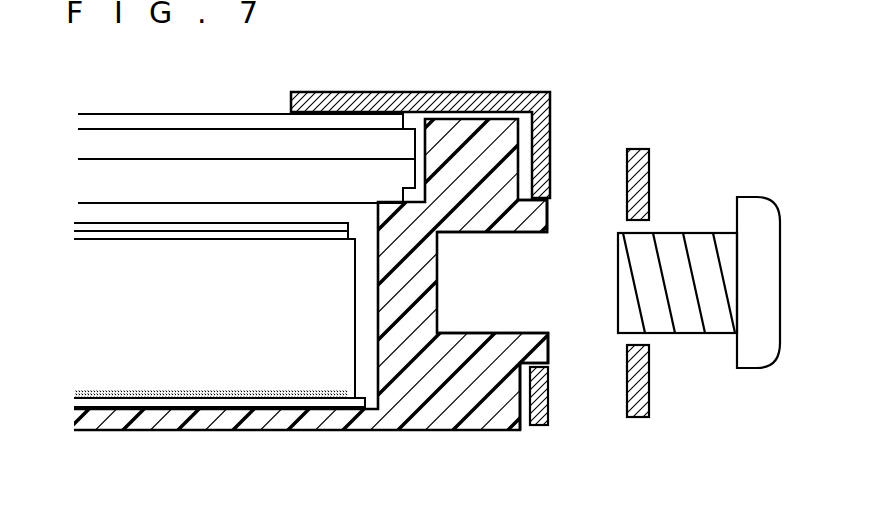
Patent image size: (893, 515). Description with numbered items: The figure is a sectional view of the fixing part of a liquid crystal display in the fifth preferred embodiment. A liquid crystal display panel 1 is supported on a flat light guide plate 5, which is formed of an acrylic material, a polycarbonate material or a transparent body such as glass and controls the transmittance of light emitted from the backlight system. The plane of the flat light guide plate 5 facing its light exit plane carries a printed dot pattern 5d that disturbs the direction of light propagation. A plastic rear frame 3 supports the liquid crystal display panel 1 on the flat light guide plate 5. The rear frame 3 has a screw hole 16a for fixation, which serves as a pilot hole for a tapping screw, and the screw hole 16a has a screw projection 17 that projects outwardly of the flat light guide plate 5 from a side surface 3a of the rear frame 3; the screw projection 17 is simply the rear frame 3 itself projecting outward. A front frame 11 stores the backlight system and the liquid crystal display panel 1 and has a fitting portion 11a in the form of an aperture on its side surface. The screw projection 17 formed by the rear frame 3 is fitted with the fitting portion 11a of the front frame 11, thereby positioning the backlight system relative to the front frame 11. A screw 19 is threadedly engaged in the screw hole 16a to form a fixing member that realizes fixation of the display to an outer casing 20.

The liquid crystal display panel 1 is at (60, 107).
The rear frame 3 is at (74, 418).
The side surface 3a is at (521, 405).
The flat light guide plate 5 is at (92, 312).
The printed dot pattern 5d is at (108, 391).
The front frame 11 is at (550, 153).
The fitting portion 11a is at (549, 381).
The screw hole 16a is at (490, 233).
The screw projection 17 is at (550, 350).
The screw 19 is at (750, 197).
The outer casing 20 is at (650, 172).